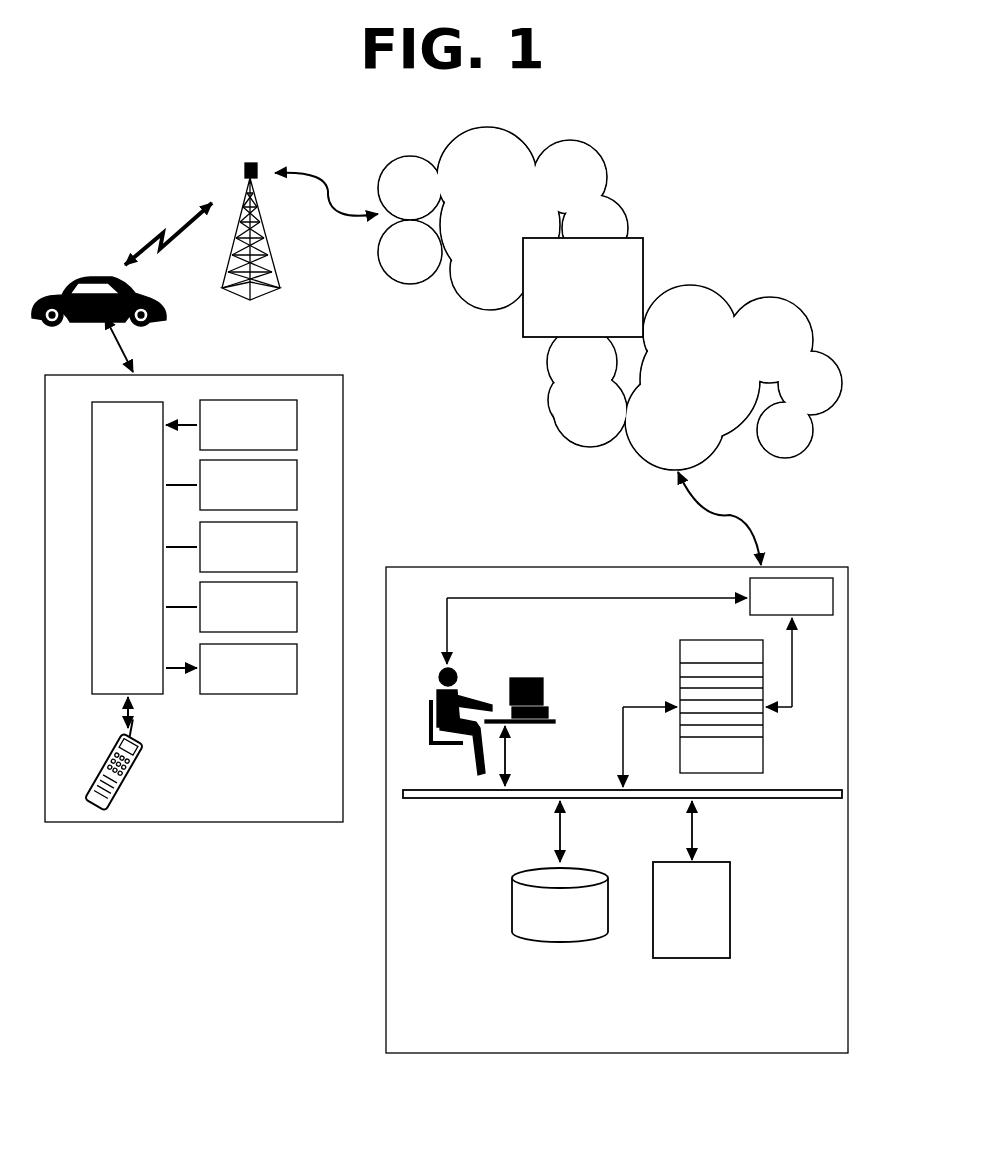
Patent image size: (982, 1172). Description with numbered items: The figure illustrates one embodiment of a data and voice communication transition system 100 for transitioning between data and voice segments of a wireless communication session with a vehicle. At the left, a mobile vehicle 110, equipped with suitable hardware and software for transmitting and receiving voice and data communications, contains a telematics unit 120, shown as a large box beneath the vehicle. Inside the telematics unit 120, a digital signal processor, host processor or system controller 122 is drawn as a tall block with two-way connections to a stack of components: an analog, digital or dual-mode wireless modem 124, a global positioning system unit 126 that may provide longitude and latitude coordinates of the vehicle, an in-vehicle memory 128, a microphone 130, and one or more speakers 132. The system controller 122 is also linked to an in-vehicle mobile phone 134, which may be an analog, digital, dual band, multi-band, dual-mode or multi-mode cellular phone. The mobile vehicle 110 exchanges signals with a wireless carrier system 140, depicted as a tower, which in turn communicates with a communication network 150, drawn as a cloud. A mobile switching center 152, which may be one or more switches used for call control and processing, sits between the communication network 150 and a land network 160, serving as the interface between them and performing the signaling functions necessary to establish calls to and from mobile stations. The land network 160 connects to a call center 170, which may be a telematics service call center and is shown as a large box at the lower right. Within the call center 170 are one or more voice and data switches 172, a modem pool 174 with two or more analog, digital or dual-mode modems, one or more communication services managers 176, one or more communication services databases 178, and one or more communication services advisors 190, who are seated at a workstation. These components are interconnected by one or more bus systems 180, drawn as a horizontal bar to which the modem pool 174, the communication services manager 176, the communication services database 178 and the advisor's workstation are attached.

The data and voice communication transition system 100 is at (91, 153).
The mobile vehicle 110 is at (118, 292).
The telematics unit 120 is at (344, 462).
The system controller 122 is at (144, 548).
The wireless modem 124 is at (248, 425).
The global positioning system unit 126 is at (248, 485).
The in-vehicle memory 128 is at (248, 547).
The microphone 130 is at (248, 607).
The speakers 132 is at (248, 669).
The in-vehicle mobile phone 134 is at (140, 757).
The wireless carrier system 140 is at (278, 273).
The communication network 150 is at (503, 218).
The mobile switching center 152 is at (583, 287).
The land network 160 is at (694, 377).
The call center 170 is at (788, 566).
The voice and data switch 172 is at (640, 642).
The modem pool 174 is at (693, 713).
The communication services manager 176 is at (691, 879).
The communication services database 178 is at (560, 871).
The bus system 180 is at (472, 800).
The communication services advisor 190 is at (488, 707).